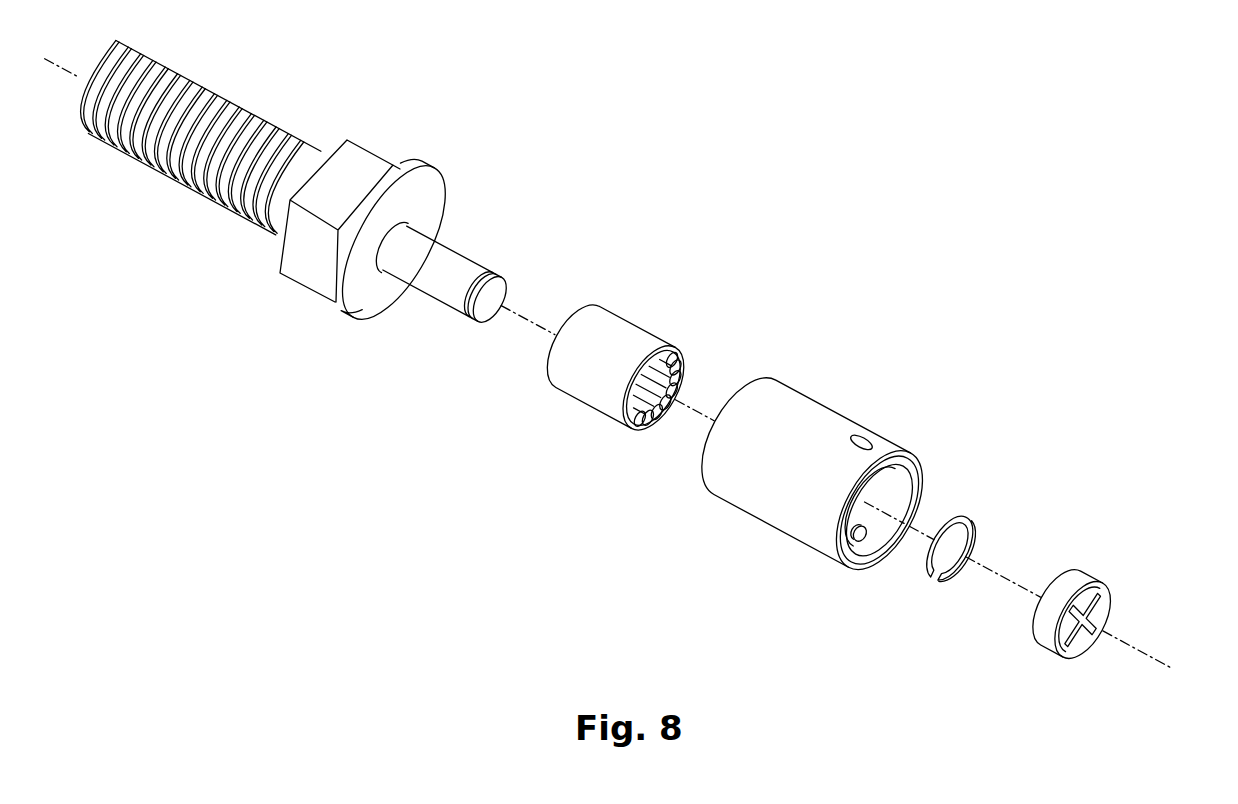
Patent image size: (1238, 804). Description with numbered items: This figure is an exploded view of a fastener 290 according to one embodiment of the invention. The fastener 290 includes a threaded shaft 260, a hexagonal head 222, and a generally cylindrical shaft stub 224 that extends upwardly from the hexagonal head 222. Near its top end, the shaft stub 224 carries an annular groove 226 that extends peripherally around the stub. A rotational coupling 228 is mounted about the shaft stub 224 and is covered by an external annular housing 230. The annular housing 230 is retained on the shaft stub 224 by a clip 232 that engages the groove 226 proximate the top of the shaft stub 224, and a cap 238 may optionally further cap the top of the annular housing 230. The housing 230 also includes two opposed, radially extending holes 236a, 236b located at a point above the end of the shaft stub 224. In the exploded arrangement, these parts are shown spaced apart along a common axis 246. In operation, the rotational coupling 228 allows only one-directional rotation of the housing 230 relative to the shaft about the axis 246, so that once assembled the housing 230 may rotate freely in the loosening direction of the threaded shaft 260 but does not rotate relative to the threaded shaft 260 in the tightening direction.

The threaded shaft 260 is at (223, 94).
The hexagonal head 222 is at (415, 162).
The shaft stub 224 is at (450, 244).
The annular groove 226 is at (493, 275).
The rotational coupling 228 is at (627, 314).
The annular housing 230 is at (813, 398).
The hole 236a is at (869, 441).
The hole 236b is at (878, 530).
The clip 232 is at (965, 519).
The cap 238 is at (1090, 573).
The axis 246 is at (1147, 654).
The fastener 290 is at (800, 271).